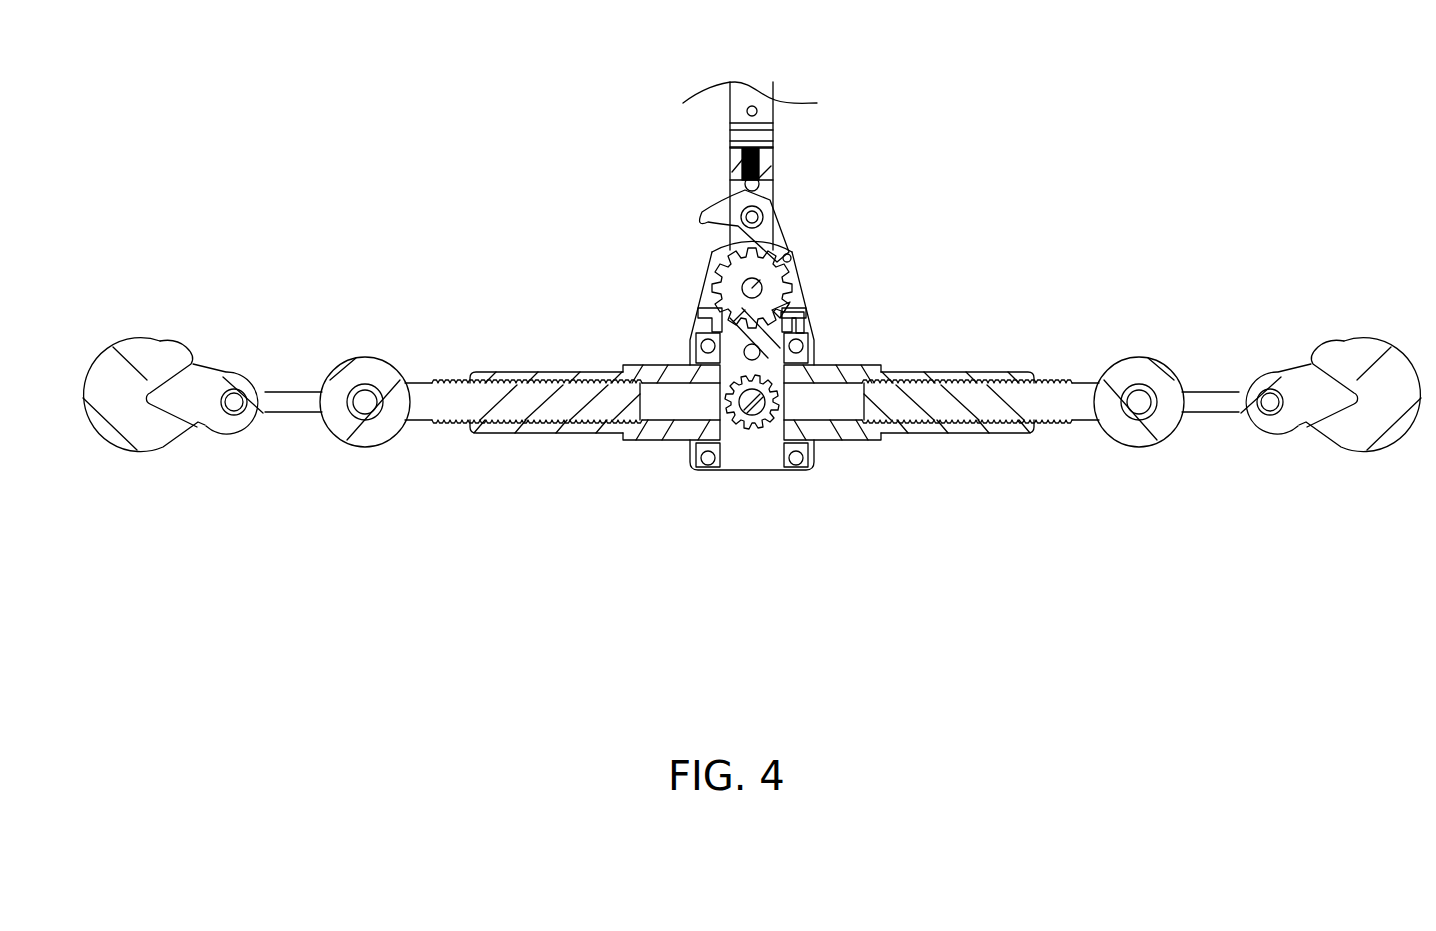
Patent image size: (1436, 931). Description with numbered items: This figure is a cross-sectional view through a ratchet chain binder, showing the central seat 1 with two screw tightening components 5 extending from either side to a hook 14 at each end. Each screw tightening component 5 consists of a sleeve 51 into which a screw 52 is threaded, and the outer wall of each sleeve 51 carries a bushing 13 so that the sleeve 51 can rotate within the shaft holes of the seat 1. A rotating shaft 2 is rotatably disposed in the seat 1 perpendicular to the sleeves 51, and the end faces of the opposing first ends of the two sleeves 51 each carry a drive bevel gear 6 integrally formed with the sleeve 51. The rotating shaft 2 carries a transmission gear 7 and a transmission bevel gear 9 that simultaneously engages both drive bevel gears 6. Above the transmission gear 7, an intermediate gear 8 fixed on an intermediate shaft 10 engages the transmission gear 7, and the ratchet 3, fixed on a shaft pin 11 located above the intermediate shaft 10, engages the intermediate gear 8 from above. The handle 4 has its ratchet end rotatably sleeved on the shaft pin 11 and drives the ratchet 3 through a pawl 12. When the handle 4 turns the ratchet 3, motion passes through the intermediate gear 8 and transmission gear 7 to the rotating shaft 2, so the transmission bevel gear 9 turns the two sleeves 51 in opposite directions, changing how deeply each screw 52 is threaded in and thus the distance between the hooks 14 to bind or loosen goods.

The seat 1 is at (694, 463).
The rotating shaft 2 is at (747, 445).
The ratchet 3 is at (722, 290).
The handle 4 is at (735, 122).
The screw tightening component 5 is at (477, 362).
The drive bevel gear 6 is at (690, 366).
The transmission gear 7 is at (773, 450).
The intermediate gear 8 is at (805, 320).
The transmission bevel gear 9 is at (728, 450).
The intermediate shaft 10 is at (790, 302).
The shaft pin 11 is at (787, 258).
The pawl 12 is at (706, 208).
The bushing 13 is at (644, 436).
The hook 14 is at (173, 422).
The sleeve 51 is at (525, 430).
The screw 52 is at (485, 407).